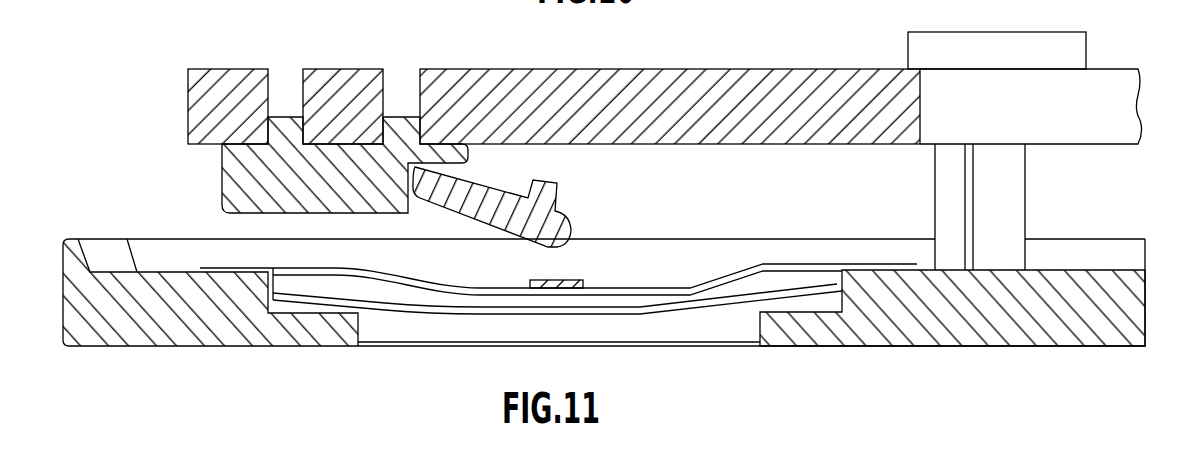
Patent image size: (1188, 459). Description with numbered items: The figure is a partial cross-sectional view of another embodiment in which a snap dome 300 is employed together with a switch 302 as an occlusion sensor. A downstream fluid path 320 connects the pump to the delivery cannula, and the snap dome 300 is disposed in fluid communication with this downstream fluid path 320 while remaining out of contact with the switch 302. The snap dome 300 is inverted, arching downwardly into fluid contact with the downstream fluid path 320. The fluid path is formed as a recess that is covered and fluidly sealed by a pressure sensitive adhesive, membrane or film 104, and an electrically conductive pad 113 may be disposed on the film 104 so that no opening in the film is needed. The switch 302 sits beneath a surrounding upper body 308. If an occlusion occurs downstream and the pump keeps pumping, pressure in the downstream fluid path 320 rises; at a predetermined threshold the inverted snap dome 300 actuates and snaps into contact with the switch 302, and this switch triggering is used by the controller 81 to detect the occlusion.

The controller 81 is at (1068, 32).
The film 104 is at (797, 264).
The electrically conductive pad 113 is at (583, 280).
The snap dome 300 is at (325, 300).
The switch 302 is at (221, 181).
The upper plate 308 is at (805, 69).
The downstream fluid path 320 is at (696, 338).